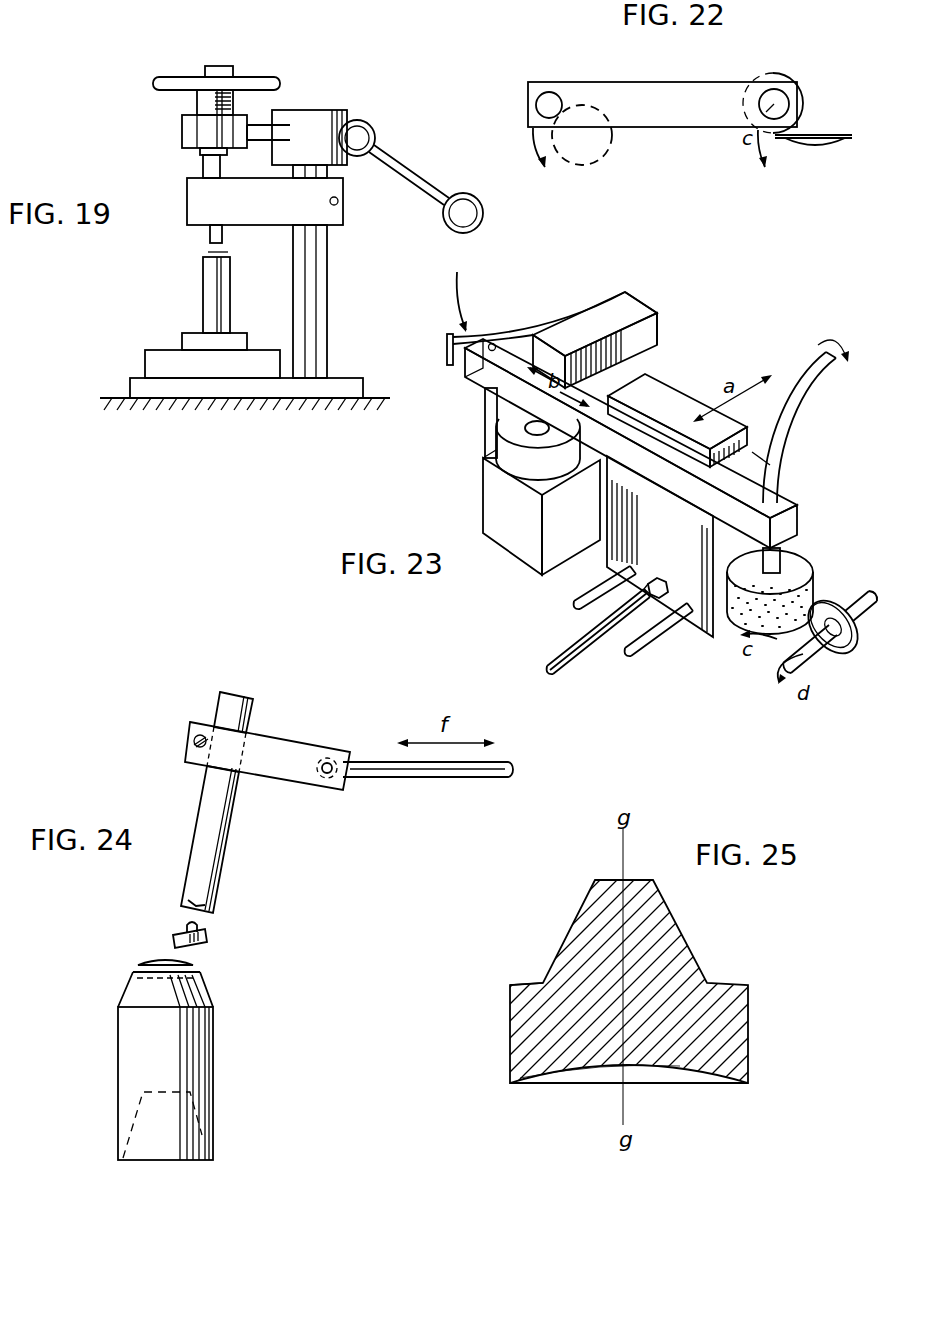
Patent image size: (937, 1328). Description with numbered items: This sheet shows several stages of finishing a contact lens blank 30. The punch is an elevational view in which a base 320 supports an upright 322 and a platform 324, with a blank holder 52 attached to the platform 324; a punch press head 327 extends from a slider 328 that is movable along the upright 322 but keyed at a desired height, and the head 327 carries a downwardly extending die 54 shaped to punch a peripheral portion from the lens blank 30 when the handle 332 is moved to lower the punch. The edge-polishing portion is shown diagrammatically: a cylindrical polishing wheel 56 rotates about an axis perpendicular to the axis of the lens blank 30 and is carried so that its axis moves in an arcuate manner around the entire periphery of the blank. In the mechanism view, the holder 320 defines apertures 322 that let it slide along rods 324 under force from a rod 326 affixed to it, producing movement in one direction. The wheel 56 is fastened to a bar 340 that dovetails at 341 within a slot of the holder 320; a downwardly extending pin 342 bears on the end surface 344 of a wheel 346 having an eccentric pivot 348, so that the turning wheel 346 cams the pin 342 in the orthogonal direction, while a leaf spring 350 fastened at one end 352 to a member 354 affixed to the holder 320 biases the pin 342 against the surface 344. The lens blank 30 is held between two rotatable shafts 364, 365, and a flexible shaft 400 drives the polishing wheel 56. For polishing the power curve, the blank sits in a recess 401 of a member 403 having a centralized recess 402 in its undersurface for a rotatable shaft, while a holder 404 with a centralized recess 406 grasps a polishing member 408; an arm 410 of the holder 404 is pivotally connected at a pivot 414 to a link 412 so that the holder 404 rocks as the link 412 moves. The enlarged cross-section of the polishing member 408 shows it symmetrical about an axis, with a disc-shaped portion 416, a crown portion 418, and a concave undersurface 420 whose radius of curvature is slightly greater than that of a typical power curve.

In FIG. 19, the lens blank 30 is at (217, 252).
In FIG. 22, the lens blank 30 is at (822, 143).
In FIG. 23, the lens blank 30 is at (858, 650).
In FIG. 24, the lens blank 30 is at (145, 962).
In FIG. 19, the blank holder 52 is at (210, 237).
In FIG. 19, the die 54 is at (217, 285).
In FIG. 22, the polishing wheel 56 is at (803, 104).
In FIG. 23, the polishing wheel 56 is at (797, 572).
In FIG. 19, the base 320 is at (238, 387).
In FIG. 23, the base 320 is at (703, 400).
In FIG. 19, the upright 322 is at (313, 308).
In FIG. 23, the upright 322 is at (630, 577).
In FIG. 19, the platform 324 is at (158, 360).
In FIG. 23, the platform 324 is at (593, 594).
In FIG. 23, the rod 326 is at (582, 653).
In FIG. 19, the punch press head 327 is at (198, 134).
In FIG. 19, the slider 328 is at (313, 117).
In FIG. 19, the handle 332 is at (463, 207).
In FIG. 22, the bar 340 is at (683, 92).
In FIG. 23, the bar 340 is at (712, 511).
In FIG. 23, the dovetail 341 is at (752, 452).
In FIG. 22, the pin 342 is at (550, 96).
In FIG. 23, the pin 342 is at (488, 411).
In FIG. 22, the end surface 344 is at (560, 163).
In FIG. 23, the end surface 344 is at (510, 458).
In FIG. 22, the wheel 346 is at (588, 145).
In FIG. 23, the wheel 346 is at (548, 432).
In FIG. 23, the eccentric pivot 348 is at (537, 432).
In FIG. 23, the leaf spring 350 is at (522, 333).
In FIG. 23, the end 352 is at (617, 292).
In FIG. 23, the member 354 is at (648, 310).
In FIG. 23, the rotatable shaft 364 is at (817, 622).
In FIG. 23, the rotatable shaft 365 is at (857, 607).
In FIG. 23, the flexible shaft 400 is at (832, 362).
In FIG. 24, the recess 401 is at (250, 972).
In FIG. 24, the centralized recess 402 is at (172, 1145).
In FIG. 24, the member 403 is at (193, 1053).
In FIG. 24, the holder 404 is at (213, 795).
In FIG. 24, the centralized recess 406 is at (217, 917).
In FIG. 24, the polishing member 408 is at (203, 943).
In FIG. 25, the polishing member 408 is at (755, 1010).
In FIG. 24, the arm 410 is at (285, 752).
In FIG. 24, the link 412 is at (399, 766).
In FIG. 24, the pivot 414 is at (331, 763).
In FIG. 25, the disc-shaped portion 416 is at (540, 1023).
In FIG. 25, the crown portion 418 is at (593, 928).
In FIG. 25, the concave undersurface 420 is at (655, 1072).